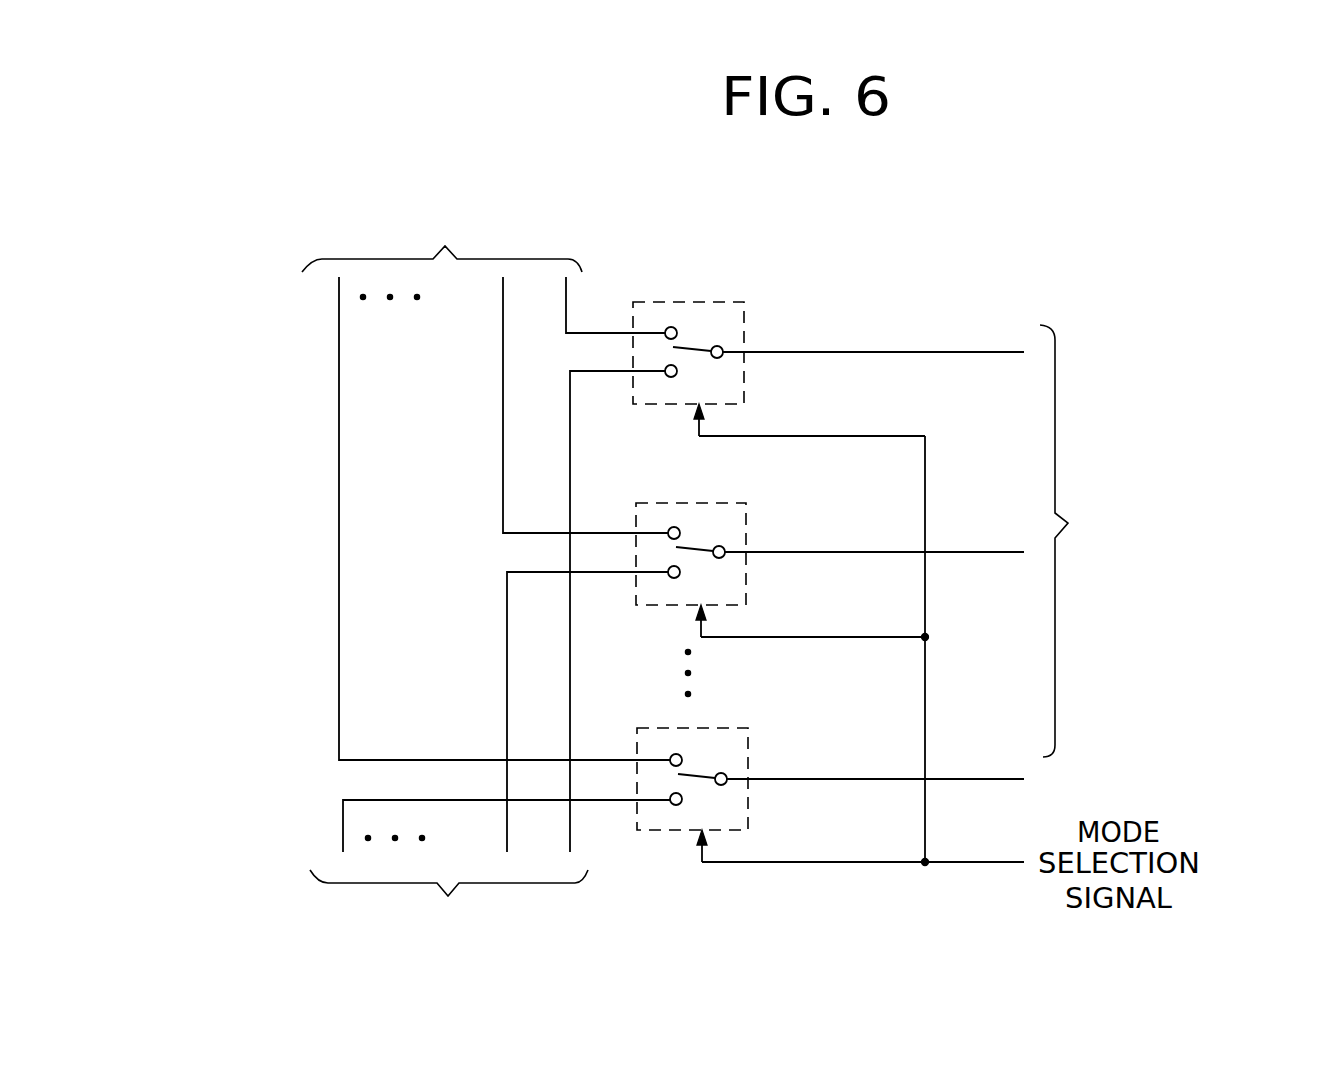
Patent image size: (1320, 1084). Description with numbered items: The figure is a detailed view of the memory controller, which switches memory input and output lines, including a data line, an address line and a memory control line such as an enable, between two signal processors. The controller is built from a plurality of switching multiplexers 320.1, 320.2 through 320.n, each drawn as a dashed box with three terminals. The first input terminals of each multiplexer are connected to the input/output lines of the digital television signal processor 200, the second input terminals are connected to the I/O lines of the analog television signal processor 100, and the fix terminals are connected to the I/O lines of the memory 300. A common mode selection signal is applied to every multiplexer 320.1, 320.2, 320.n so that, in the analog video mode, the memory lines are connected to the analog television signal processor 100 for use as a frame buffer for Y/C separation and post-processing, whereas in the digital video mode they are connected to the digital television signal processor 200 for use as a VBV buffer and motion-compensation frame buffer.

The multiplexer 320.1 is at (745, 326).
The multiplexer 320.2 is at (747, 526).
The multiplexer 320.n is at (749, 753).
The digital television signal processor 200 is at (442, 469).
The analog television signal processor 100 is at (448, 673).
The memory 300 is at (1003, 544).